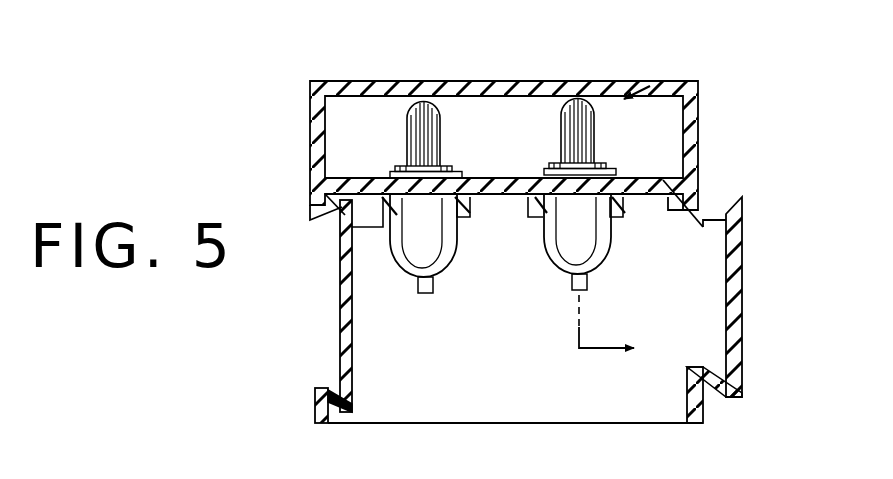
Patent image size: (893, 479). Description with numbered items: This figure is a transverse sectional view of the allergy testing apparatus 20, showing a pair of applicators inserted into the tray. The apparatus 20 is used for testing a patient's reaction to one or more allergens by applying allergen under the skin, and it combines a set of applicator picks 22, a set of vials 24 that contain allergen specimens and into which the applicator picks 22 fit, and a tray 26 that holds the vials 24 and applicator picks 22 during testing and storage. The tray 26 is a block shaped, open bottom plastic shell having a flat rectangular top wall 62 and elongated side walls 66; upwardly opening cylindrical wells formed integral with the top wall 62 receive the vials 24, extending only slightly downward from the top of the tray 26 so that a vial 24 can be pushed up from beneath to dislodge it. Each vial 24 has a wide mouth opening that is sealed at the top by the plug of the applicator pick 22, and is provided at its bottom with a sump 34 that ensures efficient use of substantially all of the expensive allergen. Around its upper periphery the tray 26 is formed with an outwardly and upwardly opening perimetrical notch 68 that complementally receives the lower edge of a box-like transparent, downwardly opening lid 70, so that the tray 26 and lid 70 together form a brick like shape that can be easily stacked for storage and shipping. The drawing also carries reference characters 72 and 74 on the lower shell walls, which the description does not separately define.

The apparatus 20 is at (298, 122).
The applicator picks 22 is at (407, 116).
The vials 24 is at (410, 228).
The tray 26 is at (346, 428).
The sump 34 is at (588, 281).
The top wall 62 is at (666, 178).
The side walls 66 is at (316, 408).
The perimetrical notch 68 is at (313, 190).
The lid 70 is at (616, 78).
The right side wall of base 72 is at (742, 297).
The left side wall of base 74 is at (345, 319).